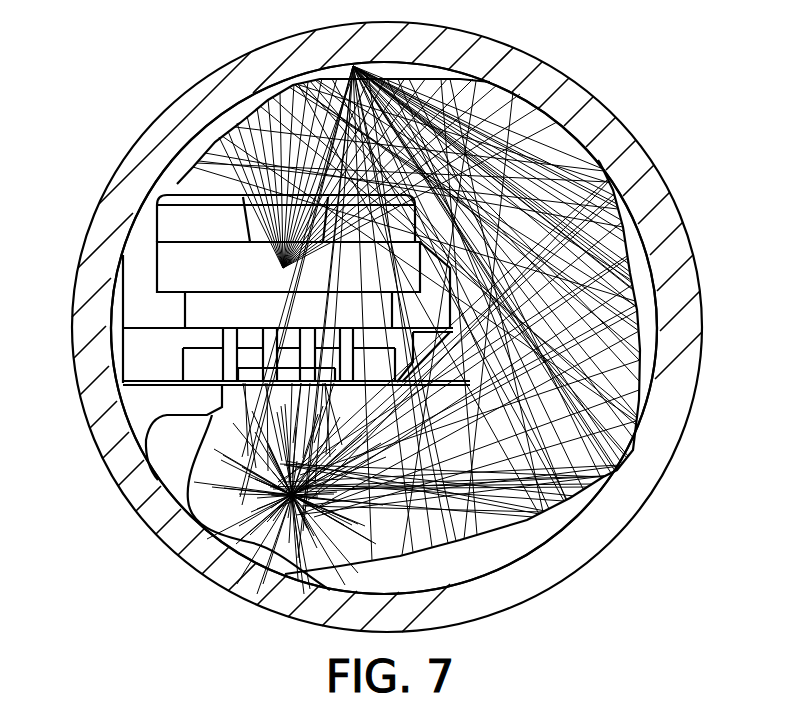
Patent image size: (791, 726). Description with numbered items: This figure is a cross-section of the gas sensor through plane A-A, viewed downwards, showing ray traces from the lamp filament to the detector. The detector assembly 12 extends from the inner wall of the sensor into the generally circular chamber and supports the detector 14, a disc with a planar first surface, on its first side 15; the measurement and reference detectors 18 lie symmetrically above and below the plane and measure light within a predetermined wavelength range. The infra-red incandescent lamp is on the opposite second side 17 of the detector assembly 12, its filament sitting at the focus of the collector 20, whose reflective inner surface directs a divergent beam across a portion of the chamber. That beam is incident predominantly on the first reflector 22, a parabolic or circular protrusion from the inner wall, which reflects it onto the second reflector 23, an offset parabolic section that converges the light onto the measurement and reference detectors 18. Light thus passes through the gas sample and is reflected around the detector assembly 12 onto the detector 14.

The detector assembly 12 is at (173, 272).
The detector 14 is at (168, 223).
The first side 15 is at (252, 115).
The second side 17 is at (232, 535).
The measurement and reference detectors 18 is at (205, 196).
The collector 20 is at (312, 548).
The first reflector 22 is at (652, 330).
The second reflector 23 is at (227, 153).